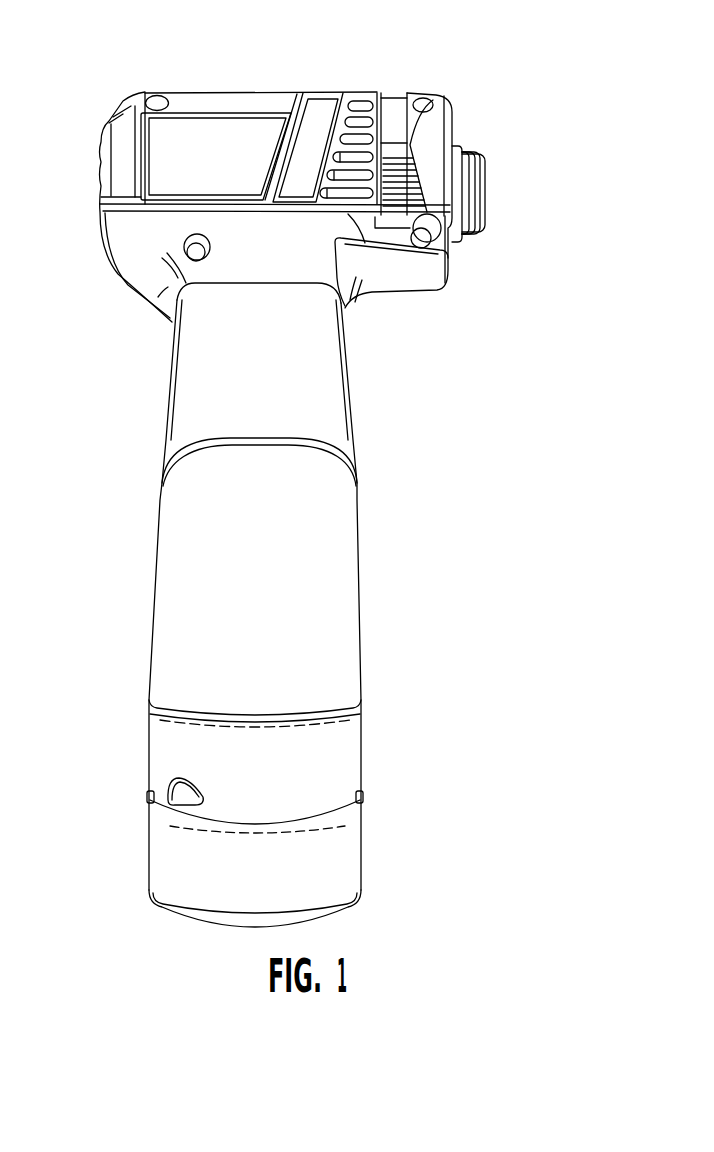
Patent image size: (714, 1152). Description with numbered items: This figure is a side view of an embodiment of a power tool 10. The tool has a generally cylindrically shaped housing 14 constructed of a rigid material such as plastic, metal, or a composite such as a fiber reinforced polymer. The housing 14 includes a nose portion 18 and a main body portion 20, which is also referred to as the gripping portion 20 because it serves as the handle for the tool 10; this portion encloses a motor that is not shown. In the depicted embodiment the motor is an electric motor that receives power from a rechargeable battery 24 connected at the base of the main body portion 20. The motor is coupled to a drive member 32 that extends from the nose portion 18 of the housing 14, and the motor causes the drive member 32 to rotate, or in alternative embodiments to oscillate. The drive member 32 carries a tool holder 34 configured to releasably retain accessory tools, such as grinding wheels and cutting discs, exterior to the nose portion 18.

The power tool 10 is at (551, 58).
The housing 14 is at (103, 461).
The nose portion 18 is at (300, 93).
The main body portion 20 is at (353, 412).
The rechargeable battery 24 is at (347, 851).
The drive member 32 is at (485, 279).
The tool holder 34 is at (485, 190).